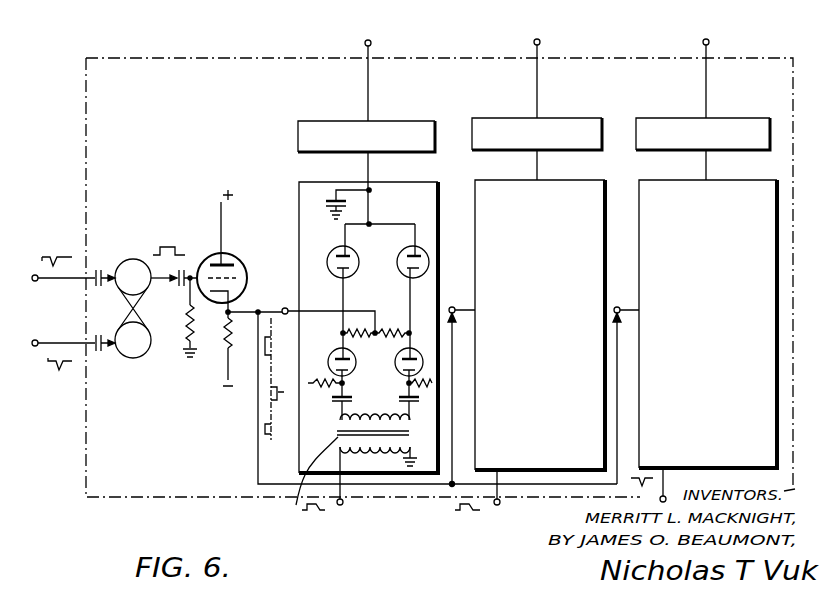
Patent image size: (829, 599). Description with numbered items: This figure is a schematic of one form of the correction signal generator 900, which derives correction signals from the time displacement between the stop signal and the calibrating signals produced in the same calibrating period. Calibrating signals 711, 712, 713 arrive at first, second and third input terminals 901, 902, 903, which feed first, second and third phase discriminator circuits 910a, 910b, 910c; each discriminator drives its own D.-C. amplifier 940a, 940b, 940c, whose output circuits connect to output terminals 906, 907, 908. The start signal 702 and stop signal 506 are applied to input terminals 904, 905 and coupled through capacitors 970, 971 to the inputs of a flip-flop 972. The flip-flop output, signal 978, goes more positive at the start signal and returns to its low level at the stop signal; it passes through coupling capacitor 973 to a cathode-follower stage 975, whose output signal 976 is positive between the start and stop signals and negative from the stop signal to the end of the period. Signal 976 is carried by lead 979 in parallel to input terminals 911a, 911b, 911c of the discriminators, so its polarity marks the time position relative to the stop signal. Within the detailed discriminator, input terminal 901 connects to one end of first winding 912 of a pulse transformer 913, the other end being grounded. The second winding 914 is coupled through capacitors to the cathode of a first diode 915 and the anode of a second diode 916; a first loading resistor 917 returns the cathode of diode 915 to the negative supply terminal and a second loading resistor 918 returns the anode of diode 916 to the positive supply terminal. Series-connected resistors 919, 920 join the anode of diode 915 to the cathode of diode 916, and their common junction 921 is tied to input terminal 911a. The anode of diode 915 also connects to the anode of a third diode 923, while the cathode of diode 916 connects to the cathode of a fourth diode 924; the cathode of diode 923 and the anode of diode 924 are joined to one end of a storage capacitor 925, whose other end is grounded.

The correction signal generator 900 is at (793, 58).
The start signal 702 is at (68, 256).
The stop signal 506 is at (51, 372).
The fourth input terminal 904 is at (35, 282).
The fifth input terminal 905 is at (35, 340).
The capacitor 970 is at (99, 268).
The capacitor 971 is at (98, 354).
The flip-flop 972 is at (148, 357).
The coupling capacitor 973 is at (181, 289).
The signal 978 is at (176, 248).
The cathode-follower stage 975 is at (226, 336).
The output signal 976 is at (263, 399).
The lead 979 is at (258, 474).
The output terminal 906 is at (371, 41).
The output terminal 907 is at (540, 41).
The output terminal 908 is at (709, 42).
The D.-C. amplifier 940a is at (423, 121).
The D.-C. amplifier 940b is at (600, 105).
The D.-C. amplifier 940c is at (770, 105).
The first phase discriminator circuit 910a is at (300, 182).
The second phase discriminator circuit 910b is at (484, 181).
The third phase discriminator circuit 910c is at (649, 181).
The input terminal 911a is at (289, 307).
The input terminal 911b is at (455, 307).
The input terminal 911c is at (620, 307).
The storage capacitor 925 is at (328, 198).
The third diode 923 is at (347, 256).
The fourth diode 924 is at (418, 248).
The resistor 919 is at (357, 329).
The resistor 920 is at (390, 331).
The common junction 921 is at (376, 337).
The first loading resistor 917 is at (333, 374).
The second diode 916 is at (413, 347).
The first diode 915 is at (346, 385).
The second loading resistor 918 is at (440, 378).
The second winding 914 is at (358, 404).
The first winding 912 is at (410, 451).
The pulse transformer 913 is at (296, 505).
The first input terminal 901 is at (338, 505).
The second input terminal 902 is at (495, 505).
The third input terminal 903 is at (671, 495).
The calibrating signal 711 is at (301, 516).
The calibrating signal 712 is at (460, 514).
The calibrating signal 713 is at (638, 476).